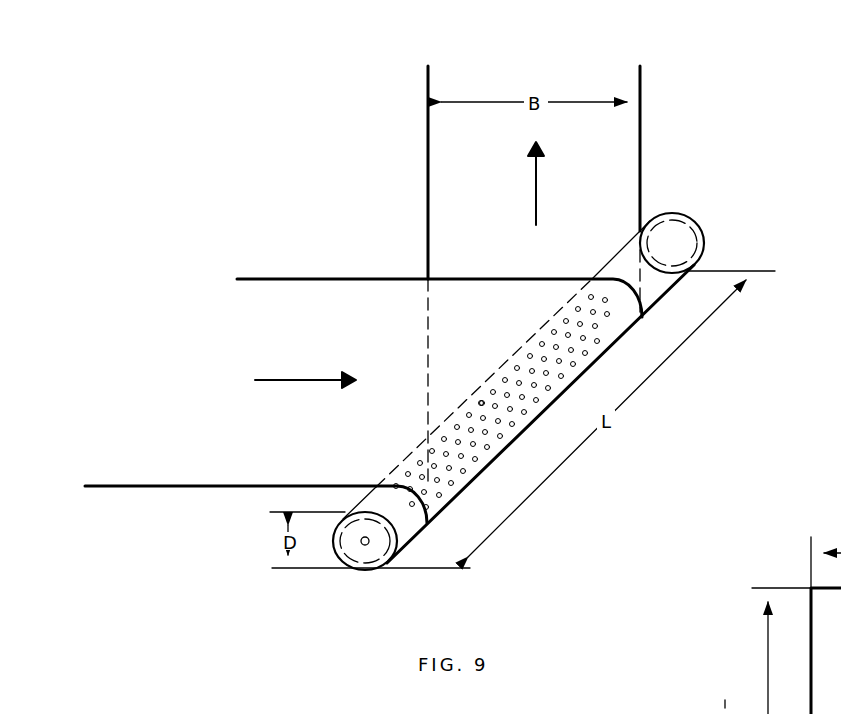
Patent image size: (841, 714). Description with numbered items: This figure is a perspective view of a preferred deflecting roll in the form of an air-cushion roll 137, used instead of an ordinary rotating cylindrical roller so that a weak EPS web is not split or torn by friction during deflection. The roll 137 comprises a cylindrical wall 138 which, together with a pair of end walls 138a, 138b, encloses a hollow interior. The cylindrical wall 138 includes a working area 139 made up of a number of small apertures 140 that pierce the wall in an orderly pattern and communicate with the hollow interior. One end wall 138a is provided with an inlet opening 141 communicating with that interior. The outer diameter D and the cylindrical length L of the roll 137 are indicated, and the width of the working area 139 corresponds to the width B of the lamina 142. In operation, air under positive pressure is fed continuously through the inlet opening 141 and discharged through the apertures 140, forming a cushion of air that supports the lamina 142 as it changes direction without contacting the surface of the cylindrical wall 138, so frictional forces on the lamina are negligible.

The air-cushion roll 137 is at (543, 392).
The cylindrical wall 138 is at (618, 270).
The end wall 138a is at (382, 551).
The end wall 138b is at (704, 240).
The working area 139 is at (537, 342).
The apertures 140 is at (517, 368).
The inlet opening 141 is at (361, 548).
The lamina 142 is at (328, 290).